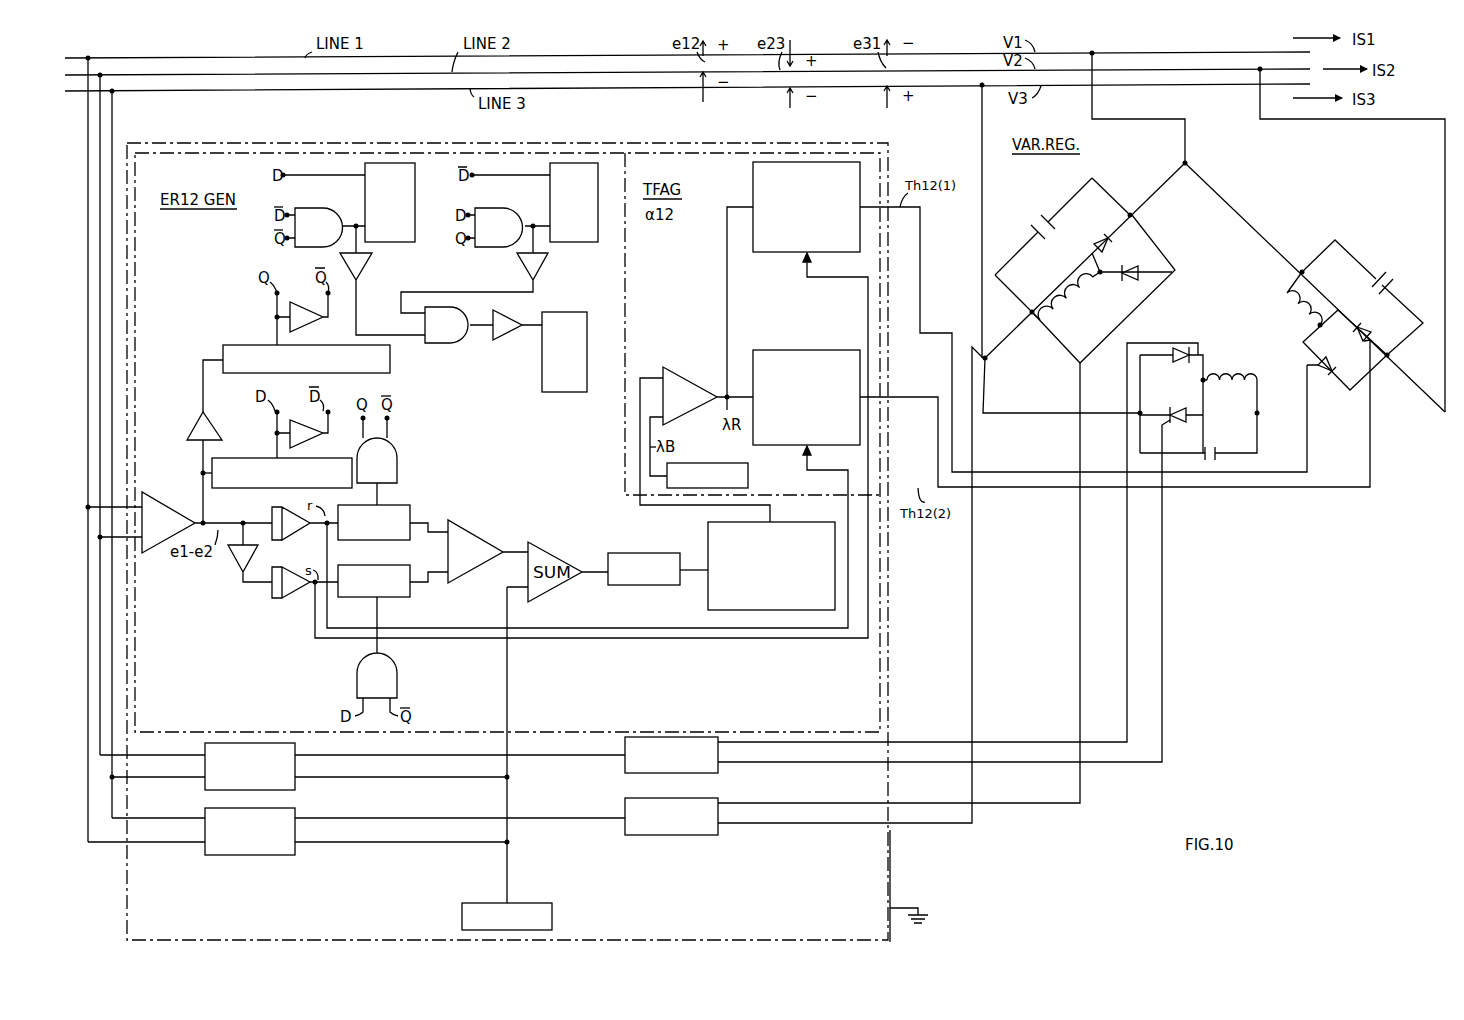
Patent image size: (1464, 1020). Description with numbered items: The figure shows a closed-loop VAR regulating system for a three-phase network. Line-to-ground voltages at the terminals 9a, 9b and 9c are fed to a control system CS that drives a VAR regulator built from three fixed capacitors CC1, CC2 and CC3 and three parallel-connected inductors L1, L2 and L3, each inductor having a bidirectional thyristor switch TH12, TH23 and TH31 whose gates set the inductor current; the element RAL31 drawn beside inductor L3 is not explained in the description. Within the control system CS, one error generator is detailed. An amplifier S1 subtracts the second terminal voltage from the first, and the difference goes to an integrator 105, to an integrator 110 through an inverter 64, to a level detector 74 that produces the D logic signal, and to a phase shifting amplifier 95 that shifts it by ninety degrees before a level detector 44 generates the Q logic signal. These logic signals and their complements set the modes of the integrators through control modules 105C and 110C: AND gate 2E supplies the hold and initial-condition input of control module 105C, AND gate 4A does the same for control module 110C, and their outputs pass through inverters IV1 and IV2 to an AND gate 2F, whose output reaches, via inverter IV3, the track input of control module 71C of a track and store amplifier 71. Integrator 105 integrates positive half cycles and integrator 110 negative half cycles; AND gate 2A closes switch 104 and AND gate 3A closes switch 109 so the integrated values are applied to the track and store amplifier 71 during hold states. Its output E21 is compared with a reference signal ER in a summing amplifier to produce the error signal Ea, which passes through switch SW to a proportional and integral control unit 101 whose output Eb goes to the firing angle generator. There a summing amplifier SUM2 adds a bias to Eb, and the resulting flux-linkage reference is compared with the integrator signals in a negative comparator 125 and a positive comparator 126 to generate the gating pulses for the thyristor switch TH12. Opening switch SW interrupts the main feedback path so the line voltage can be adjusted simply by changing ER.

The terminal 9a is at (88, 58).
The terminal 9b is at (100, 75).
The terminal 9c is at (112, 91).
The AND gate 2E is at (297, 208).
The AND gate 4A is at (485, 208).
The control module 105C is at (390, 202).
The control module 110C is at (574, 202).
The inverter IV1 is at (366, 268).
The inverter IV2 is at (543, 268).
The inverter IV3 is at (510, 342).
The AND gate 2F is at (435, 345).
The control module 71C is at (564, 352).
The level detector 44 is at (238, 345).
The level detector 74 is at (252, 458).
The phase shifting amplifier 95 is at (197, 424).
The AND gate 2A is at (397, 450).
The AND gate 3A is at (397, 668).
The amplifier S1 is at (179, 522).
The integrator 105 is at (272, 515).
The integrator 110 is at (278, 598).
The inverter 64 is at (236, 570).
The switch 104 is at (399, 505).
The switch 109 is at (400, 598).
The track and store amplifier 71 is at (462, 524).
The output signal of track and store amplifier E21 is at (507, 552).
The error signal Ea is at (588, 563).
The switch SW is at (660, 586).
The proportional and integral control unit 101 is at (708, 608).
The reference signal ER is at (507, 668).
The output signal of proportional and integral control unit Eb is at (662, 505).
The summing amplifier SUM2 is at (682, 367).
The negative comparator 125 is at (783, 252).
The positive comparator 126 is at (770, 350).
The control system CS is at (890, 860).
The bidirectional thyristor switch TH31 is at (1117, 240).
The bidirectional thyristor switch TH12 is at (1378, 323).
The bidirectional thyristor switch TH23 is at (1172, 333).
The inductor L1 is at (1296, 297).
The inductor L2 is at (1245, 387).
The inductor L3 is at (1066, 296).
The fixed capacitor CC1 is at (1362, 277).
The fixed capacitor CC2 is at (1210, 462).
The fixed capacitor CC3 is at (1048, 240).
The reactor RAL31 is at (1082, 298).